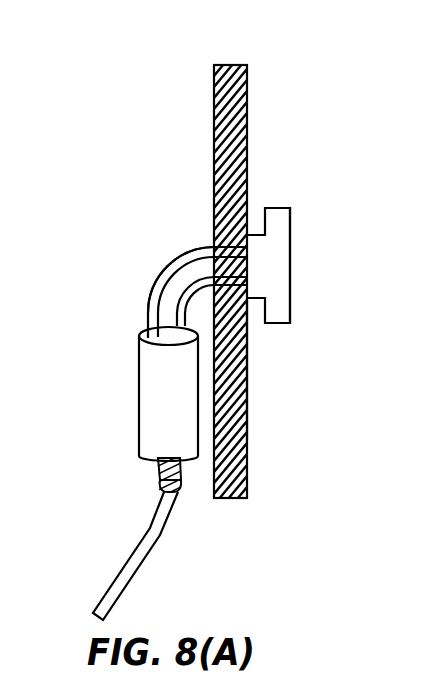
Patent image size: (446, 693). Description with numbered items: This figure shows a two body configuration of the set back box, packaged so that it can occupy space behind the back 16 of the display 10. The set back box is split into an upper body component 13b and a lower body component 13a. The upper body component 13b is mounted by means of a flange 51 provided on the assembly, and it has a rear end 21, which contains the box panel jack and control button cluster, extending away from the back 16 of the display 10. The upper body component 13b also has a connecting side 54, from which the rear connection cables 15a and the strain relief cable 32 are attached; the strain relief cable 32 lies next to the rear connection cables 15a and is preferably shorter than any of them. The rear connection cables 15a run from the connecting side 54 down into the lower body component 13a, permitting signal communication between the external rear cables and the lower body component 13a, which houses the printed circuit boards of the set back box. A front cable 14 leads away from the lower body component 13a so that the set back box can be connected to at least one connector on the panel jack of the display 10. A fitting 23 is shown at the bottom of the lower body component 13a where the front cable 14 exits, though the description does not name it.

The display 10 is at (249, 160).
The lower body component 13a is at (139, 380).
The upper body component 13b is at (291, 222).
The front cable 14 is at (126, 553).
The rear connection cables 15a is at (168, 262).
The back of the display 16 is at (248, 370).
The rear end 21 is at (291, 272).
The strain relief 23 is at (139, 454).
The strain relief cable 32 is at (150, 304).
The flange 51 is at (212, 236).
The connecting side 54 is at (213, 218).